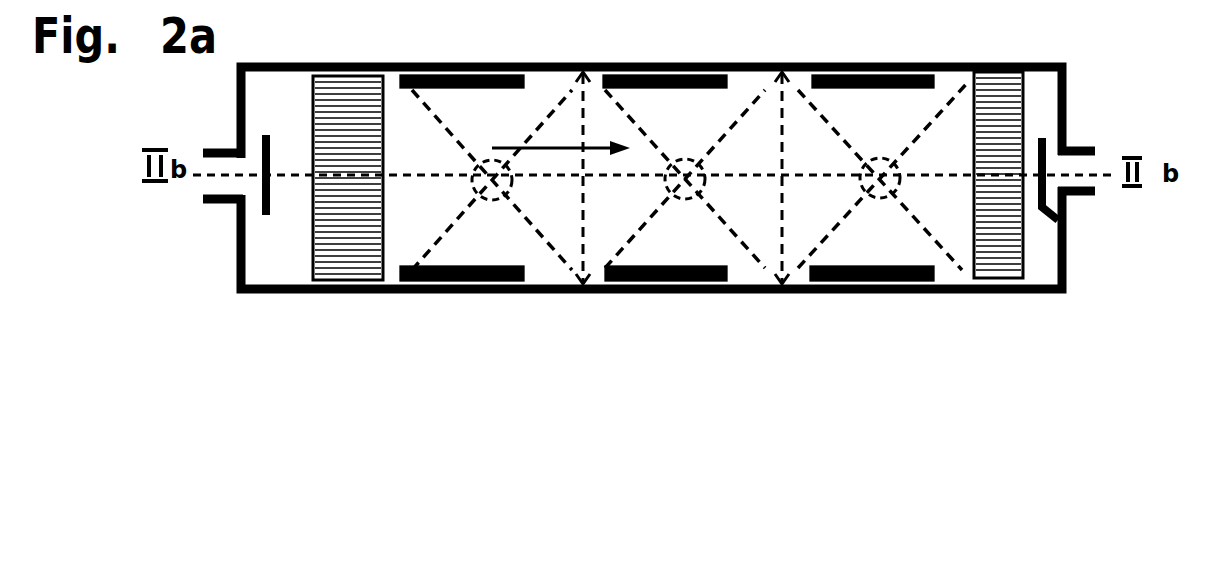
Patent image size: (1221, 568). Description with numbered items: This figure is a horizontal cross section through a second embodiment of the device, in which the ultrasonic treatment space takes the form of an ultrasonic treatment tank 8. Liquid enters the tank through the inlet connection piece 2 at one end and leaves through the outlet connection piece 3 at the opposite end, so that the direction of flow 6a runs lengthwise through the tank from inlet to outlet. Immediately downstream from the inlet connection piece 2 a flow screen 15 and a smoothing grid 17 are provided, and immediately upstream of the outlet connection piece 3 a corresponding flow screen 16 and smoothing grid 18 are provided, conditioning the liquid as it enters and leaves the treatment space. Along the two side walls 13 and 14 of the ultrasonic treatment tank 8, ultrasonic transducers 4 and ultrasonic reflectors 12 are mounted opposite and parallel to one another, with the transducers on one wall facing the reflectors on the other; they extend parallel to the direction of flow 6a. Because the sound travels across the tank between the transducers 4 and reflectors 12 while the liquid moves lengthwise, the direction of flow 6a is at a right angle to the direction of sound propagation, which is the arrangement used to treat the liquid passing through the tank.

The inlet connection piece 2 is at (227, 187).
The outlet connection piece 3 is at (1083, 153).
The ultrasonic transducers 4 is at (437, 282).
The direction of flow 6a is at (561, 170).
The ultrasonic treatment tank 8 is at (745, 262).
The ultrasonic reflectors 12 is at (467, 72).
The side wall 13 is at (540, 293).
The side wall 14 is at (753, 64).
The flow screen 15 is at (265, 134).
The flow screen 16 is at (1058, 220).
The smoothing grid 17 is at (350, 115).
The smoothing grid 18 is at (993, 110).